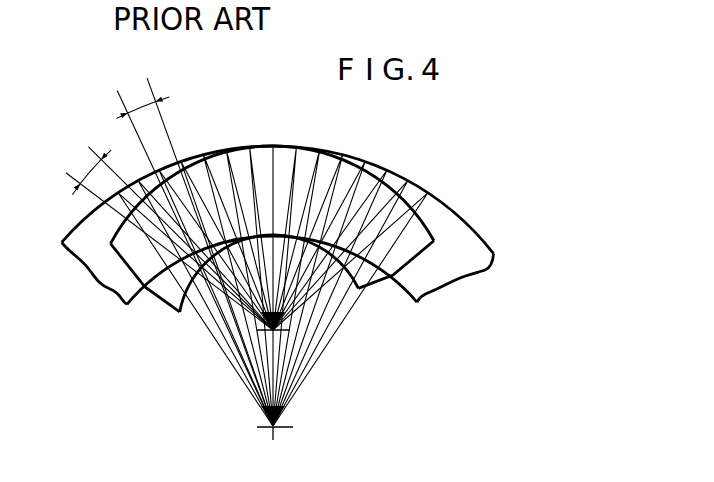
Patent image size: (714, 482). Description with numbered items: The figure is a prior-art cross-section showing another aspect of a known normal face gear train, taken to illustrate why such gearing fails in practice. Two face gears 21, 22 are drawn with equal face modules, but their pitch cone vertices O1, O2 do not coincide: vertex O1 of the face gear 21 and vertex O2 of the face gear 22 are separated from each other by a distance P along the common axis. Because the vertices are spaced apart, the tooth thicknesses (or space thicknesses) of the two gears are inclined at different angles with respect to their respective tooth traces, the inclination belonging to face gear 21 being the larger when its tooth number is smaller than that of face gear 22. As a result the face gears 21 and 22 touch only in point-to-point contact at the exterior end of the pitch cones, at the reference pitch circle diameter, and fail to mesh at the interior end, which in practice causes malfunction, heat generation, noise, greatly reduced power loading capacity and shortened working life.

The face gear 21 is at (420, 238).
The face gear 22 is at (468, 238).
The pitch cone vertex O1 is at (283, 337).
The pitch cone vertex O2 is at (283, 435).